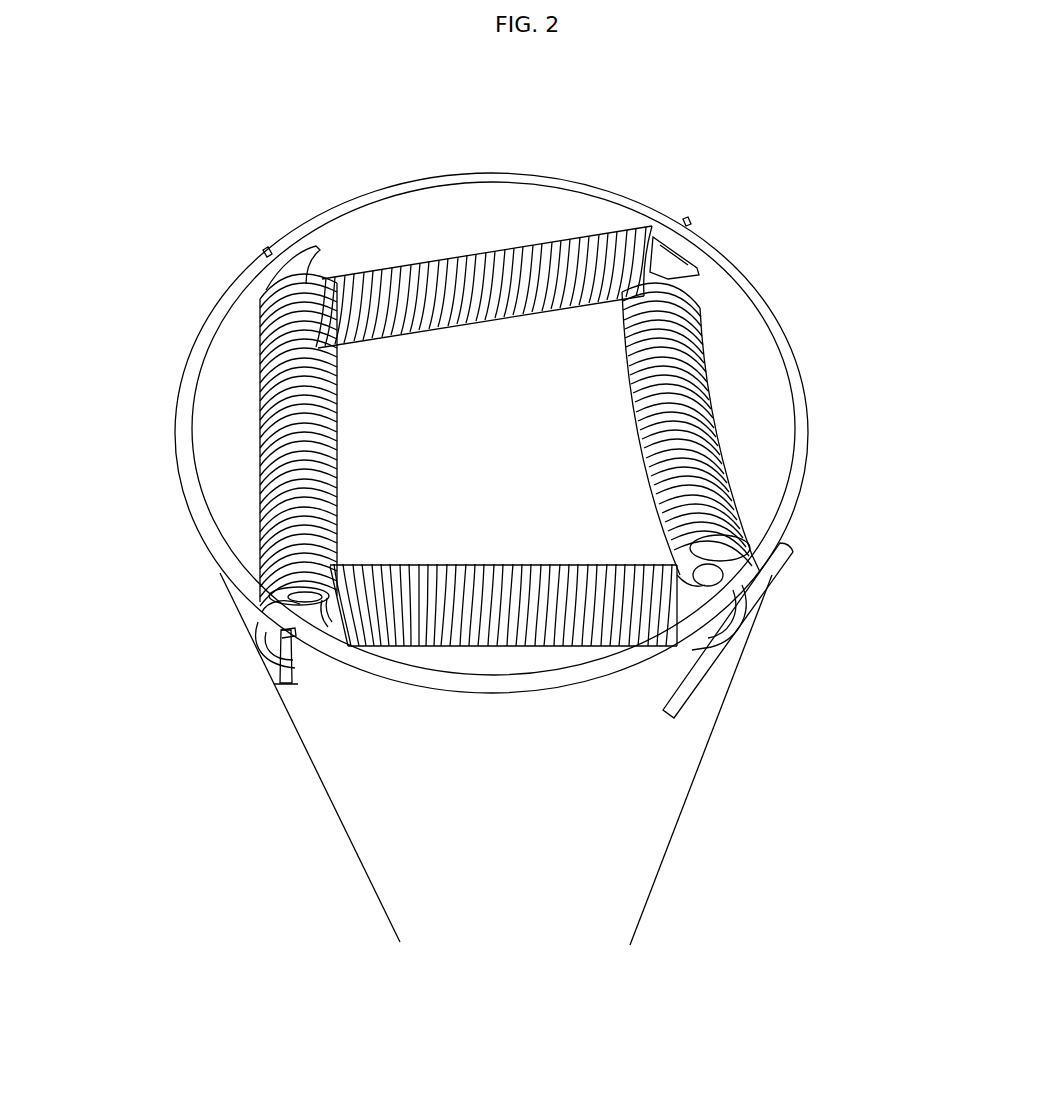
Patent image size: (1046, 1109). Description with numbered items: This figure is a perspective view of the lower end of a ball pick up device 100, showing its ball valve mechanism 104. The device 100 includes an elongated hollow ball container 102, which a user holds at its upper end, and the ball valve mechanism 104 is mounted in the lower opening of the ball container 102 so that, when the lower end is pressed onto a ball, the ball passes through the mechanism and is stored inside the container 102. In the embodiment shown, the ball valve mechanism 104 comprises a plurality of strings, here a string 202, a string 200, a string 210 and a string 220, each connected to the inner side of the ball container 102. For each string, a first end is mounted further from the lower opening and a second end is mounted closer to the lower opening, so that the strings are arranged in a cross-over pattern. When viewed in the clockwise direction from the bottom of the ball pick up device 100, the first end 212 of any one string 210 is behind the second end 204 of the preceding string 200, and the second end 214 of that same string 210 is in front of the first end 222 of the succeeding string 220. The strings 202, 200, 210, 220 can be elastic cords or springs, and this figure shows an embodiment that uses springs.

The ball pick up device 100 is at (172, 303).
The elongated hollow ball container 102 is at (336, 833).
The ball valve mechanism 104 is at (764, 256).
The string 200 is at (729, 412).
The string 202 is at (460, 246).
The second end 204 is at (760, 532).
The string 210 is at (495, 652).
The first end 212 is at (668, 565).
The second end 214 is at (347, 565).
The string 220 is at (241, 447).
The first end 222 is at (246, 590).